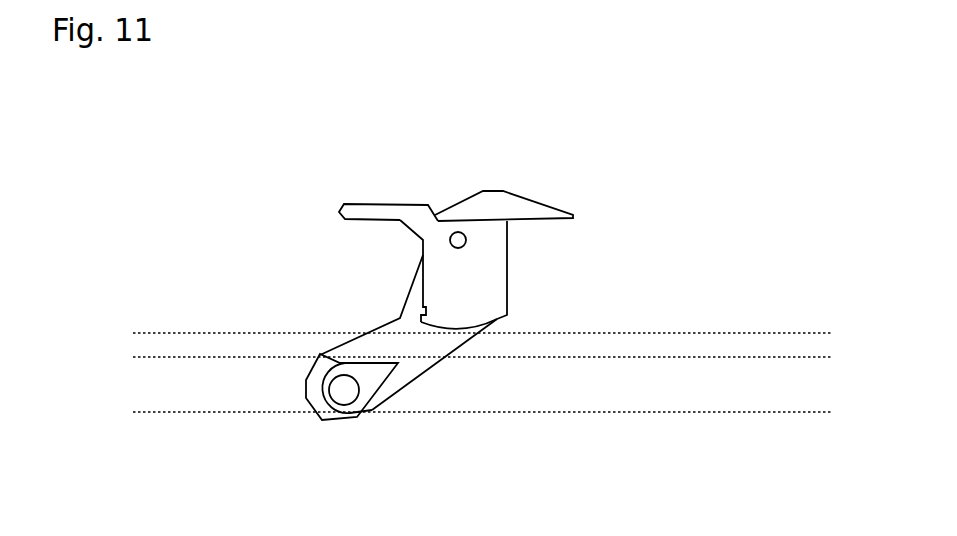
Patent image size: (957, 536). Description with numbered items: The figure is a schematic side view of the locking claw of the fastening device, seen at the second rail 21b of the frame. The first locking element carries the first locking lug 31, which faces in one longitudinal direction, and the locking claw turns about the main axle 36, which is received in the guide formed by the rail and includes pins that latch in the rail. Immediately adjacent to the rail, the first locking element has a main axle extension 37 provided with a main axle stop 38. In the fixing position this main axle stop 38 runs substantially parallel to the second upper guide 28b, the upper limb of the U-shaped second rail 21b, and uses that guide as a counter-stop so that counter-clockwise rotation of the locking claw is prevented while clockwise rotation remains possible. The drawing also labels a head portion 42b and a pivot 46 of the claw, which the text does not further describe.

The first locking lug 31 is at (358, 211).
The catch head 42b is at (472, 274).
The pivot pin 46 is at (458, 240).
The main axle stop 38 is at (347, 353).
The main axle extension 37 is at (382, 372).
The main axle 36 is at (342, 391).
The second rail 21b is at (182, 332).
The second upper guide 28b is at (698, 343).